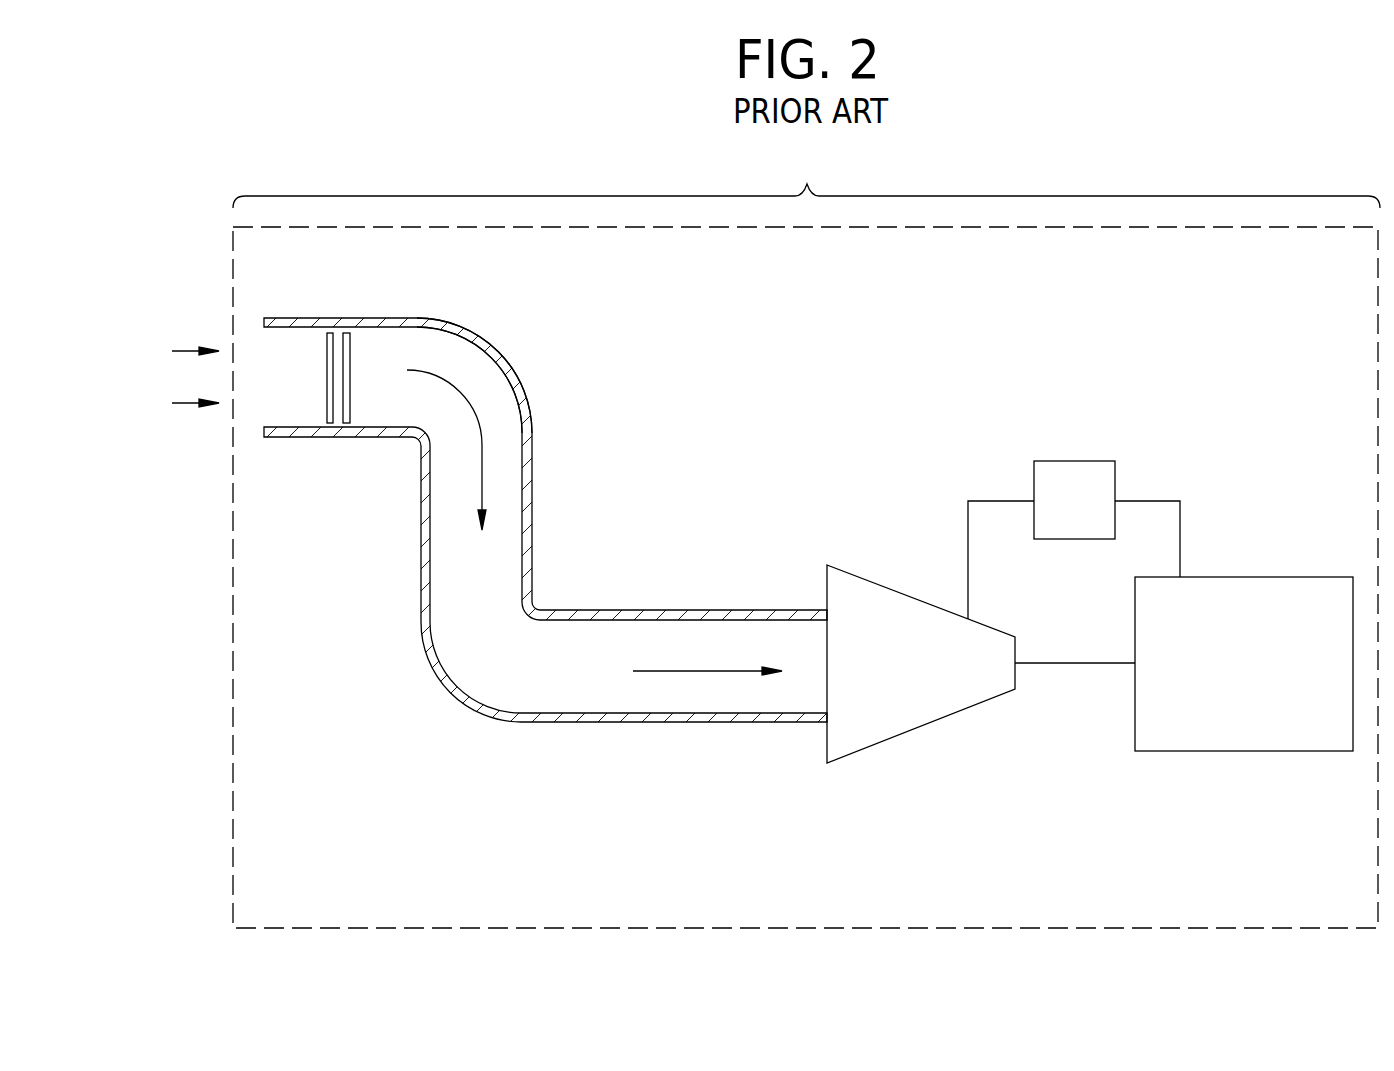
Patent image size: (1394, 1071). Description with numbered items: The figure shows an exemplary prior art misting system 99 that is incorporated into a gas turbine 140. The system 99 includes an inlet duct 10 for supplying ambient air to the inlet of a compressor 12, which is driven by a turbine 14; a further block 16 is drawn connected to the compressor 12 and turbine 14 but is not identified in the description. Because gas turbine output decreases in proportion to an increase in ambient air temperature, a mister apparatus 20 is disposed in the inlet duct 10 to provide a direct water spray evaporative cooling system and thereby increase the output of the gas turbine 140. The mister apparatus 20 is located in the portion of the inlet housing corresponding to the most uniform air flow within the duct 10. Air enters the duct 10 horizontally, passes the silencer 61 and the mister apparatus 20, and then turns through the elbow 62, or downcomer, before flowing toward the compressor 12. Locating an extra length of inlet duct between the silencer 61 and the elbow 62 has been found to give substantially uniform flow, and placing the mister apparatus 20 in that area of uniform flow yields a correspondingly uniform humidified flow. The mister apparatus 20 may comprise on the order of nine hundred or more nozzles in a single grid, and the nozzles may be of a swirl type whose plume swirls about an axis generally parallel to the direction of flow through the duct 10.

The inlet duct 10 is at (402, 318).
The compressor 12 is at (870, 577).
The turbine 14 is at (1135, 690).
The combustor 16 is at (1075, 461).
The mister apparatus 20 is at (350, 380).
The silencer 61 is at (326, 384).
The elbow 62 is at (493, 350).
The misting system 99 is at (806, 178).
The gas turbine 140 is at (233, 876).